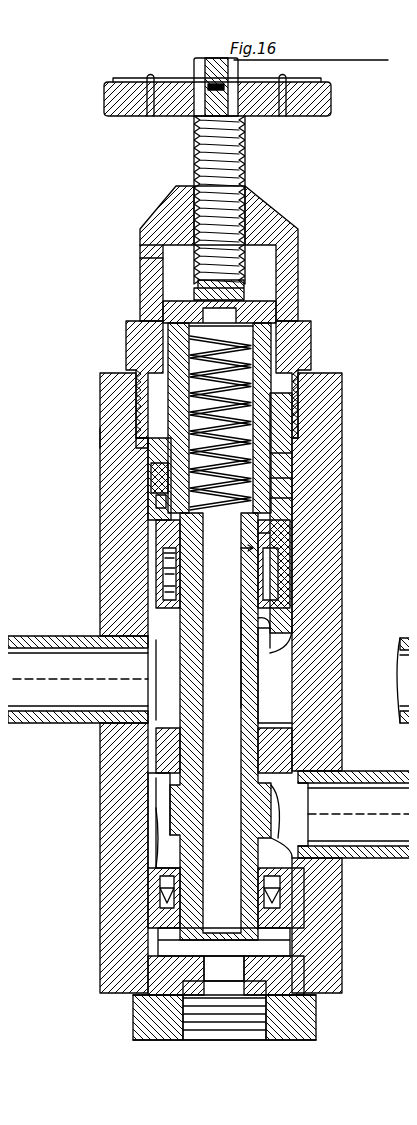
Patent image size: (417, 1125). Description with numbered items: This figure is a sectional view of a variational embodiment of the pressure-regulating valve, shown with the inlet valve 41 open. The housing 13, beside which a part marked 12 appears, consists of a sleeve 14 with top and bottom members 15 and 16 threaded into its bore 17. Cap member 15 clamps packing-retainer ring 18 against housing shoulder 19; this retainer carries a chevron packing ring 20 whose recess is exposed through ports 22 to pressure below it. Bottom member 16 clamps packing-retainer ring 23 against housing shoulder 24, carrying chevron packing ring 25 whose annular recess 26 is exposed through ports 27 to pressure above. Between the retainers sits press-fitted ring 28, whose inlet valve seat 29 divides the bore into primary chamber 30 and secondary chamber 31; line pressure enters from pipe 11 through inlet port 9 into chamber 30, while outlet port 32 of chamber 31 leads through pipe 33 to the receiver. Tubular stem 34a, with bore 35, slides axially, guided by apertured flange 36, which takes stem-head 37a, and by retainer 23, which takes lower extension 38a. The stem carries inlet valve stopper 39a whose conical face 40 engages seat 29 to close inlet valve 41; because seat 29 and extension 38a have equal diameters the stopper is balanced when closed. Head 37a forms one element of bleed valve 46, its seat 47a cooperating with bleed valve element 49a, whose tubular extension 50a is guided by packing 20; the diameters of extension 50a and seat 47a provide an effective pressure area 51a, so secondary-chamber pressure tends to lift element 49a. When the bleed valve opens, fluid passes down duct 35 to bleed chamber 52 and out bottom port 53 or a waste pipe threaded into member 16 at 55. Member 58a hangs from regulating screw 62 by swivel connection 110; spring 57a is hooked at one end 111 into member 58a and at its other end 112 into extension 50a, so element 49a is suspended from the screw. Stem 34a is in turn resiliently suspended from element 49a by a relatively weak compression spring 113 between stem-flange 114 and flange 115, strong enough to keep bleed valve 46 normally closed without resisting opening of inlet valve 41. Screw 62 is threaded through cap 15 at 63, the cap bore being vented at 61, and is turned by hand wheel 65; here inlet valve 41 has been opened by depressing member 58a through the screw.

The hand wheel 65 is at (326, 92).
The actuating or regulating screw 62 is at (222, 158).
The threaded portion of cap 63 is at (240, 212).
The vent 61 is at (135, 243).
The swivel connection 110 is at (236, 290).
The hooked end of spring 111 is at (266, 304).
The depresser member 58a is at (250, 322).
The cap member 15 is at (303, 340).
The spring 57a is at (178, 335).
The tubular extension of bleed valve element 50a is at (285, 398).
The valve body 12 is at (86, 378).
The housing 13 is at (92, 420).
The sleeve 14 is at (272, 425).
The packing-retainer ring 18 is at (300, 455).
The housing shoulder 19 is at (300, 470).
The bleed valve element 49a is at (300, 490).
The chevron type packing ring 20 is at (128, 436).
The ports 22 is at (143, 468).
The hooked end of spring 112 is at (148, 490).
The stem-head 37a is at (236, 595).
The bleed valve 46 is at (163, 524).
The stem-flange 114 is at (155, 547).
The compression spring 113 is at (155, 565).
The flange on bleed valve element 115 is at (155, 585).
The effective pressure area 51a is at (270, 530).
The seat 47a is at (250, 540).
The pipe 33 is at (48, 626).
The outlet port 32 is at (148, 685).
The apertured flange 36 is at (290, 618).
The tubular stem 34a is at (242, 648).
The secondary chamber 31 is at (265, 662).
The stem bore or duct 35 is at (220, 680).
The press-fitted ring 28 is at (150, 755).
The inlet valve seat 29 is at (285, 760).
The inlet valve 41 is at (155, 768).
The bore of sleeve 17 is at (150, 797).
The inlet valve stopper 39a is at (160, 815).
The primary chamber 30 is at (148, 818).
The ports 27 is at (150, 858).
The conical face 40 is at (283, 821).
The pipe 11 is at (388, 772).
The inlet port 9 is at (298, 822).
The packing-retainer ring 23 is at (140, 884).
The chevron type packing ring 25 is at (152, 898).
The housing shoulder 24 is at (296, 868).
The packing ring 26 is at (290, 885).
The bleed chamber 52 is at (165, 935).
The lower extension of stem 38a is at (258, 935).
The bottom port 53 is at (206, 962).
The threaded connection for waste pipe 55 is at (208, 1015).
The bottom member 16 is at (292, 1015).